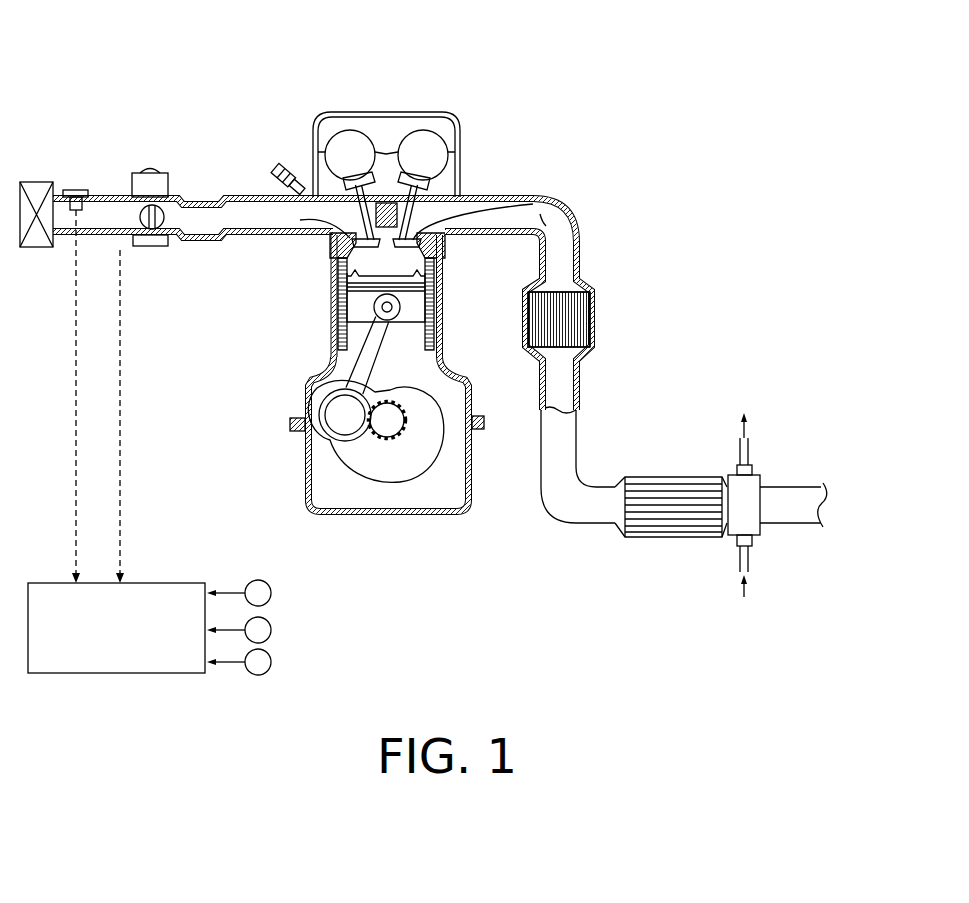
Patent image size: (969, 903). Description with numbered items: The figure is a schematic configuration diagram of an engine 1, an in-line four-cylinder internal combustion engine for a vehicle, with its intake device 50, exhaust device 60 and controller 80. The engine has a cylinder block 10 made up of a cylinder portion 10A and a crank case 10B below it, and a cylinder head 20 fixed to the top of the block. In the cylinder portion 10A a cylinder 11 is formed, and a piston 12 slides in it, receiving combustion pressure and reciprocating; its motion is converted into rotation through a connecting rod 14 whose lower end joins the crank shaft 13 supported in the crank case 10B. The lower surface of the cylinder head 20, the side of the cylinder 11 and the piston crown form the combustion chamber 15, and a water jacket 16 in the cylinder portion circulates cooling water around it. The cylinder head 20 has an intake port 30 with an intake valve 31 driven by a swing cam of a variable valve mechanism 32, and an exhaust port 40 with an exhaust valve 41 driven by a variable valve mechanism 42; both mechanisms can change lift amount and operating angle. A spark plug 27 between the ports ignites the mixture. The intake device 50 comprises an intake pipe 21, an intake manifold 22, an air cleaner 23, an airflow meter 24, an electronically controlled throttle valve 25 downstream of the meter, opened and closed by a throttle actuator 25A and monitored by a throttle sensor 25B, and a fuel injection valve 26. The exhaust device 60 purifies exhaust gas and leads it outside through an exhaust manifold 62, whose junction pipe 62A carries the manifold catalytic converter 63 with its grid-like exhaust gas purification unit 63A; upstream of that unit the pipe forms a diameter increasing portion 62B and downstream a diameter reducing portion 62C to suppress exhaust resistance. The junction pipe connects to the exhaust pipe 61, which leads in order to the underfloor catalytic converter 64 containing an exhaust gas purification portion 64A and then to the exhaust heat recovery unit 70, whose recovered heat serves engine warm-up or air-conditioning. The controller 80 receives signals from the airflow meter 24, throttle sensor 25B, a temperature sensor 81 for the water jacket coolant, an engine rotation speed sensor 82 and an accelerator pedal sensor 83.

The engine 1 is at (558, 68).
The cylinder block 10 is at (236, 297).
The cylinder portion 10A is at (328, 296).
The crank case 10B is at (330, 368).
The cylinder 11 is at (350, 260).
The piston 12 is at (417, 308).
The crank shaft 13 is at (350, 458).
The connecting rod 14 is at (332, 388).
The combustion chamber 15 is at (340, 278).
The water jacket 16 is at (430, 335).
The cylinder head 20 is at (455, 113).
The intake pipe 21 is at (118, 195).
The intake manifold 22 is at (250, 197).
The air cleaner 23 is at (38, 182).
The airflow meter 24 is at (80, 190).
The throttle valve 25 is at (140, 222).
The throttle actuator 25A is at (140, 173).
The throttle sensor 25B is at (153, 246).
The fuel injection valve 26 is at (303, 190).
The spark plug 27 is at (440, 205).
The intake port 30 is at (300, 215).
The intake valve 31 is at (324, 137).
The variable valve mechanism 32 is at (348, 143).
The exhaust port 40 is at (430, 222).
The exhaust valve 41 is at (540, 215).
The variable valve mechanism 42 is at (420, 143).
The intake device 50 is at (87, 92).
The exhaust device 60 is at (588, 552).
The exhaust pipe 61 is at (578, 440).
The exhaust manifold 62 is at (570, 220).
The junction pipe 62A is at (595, 310).
The diameter increasing portion 62B is at (538, 282).
The diameter reducing portion 62C is at (533, 362).
The manifold catalytic converter 63 is at (590, 285).
The exhaust gas purification unit 63A is at (580, 335).
The underfloor catalytic converter 64 is at (686, 547).
The exhaust gas purification portion 64A is at (647, 520).
The exhaust heat recovery unit 70 is at (767, 551).
The controller 80 is at (60, 674).
The temperature sensor 81 is at (271, 593).
The engine rotation speed sensor 82 is at (271, 630).
The accelerator pedal sensor 83 is at (271, 662).